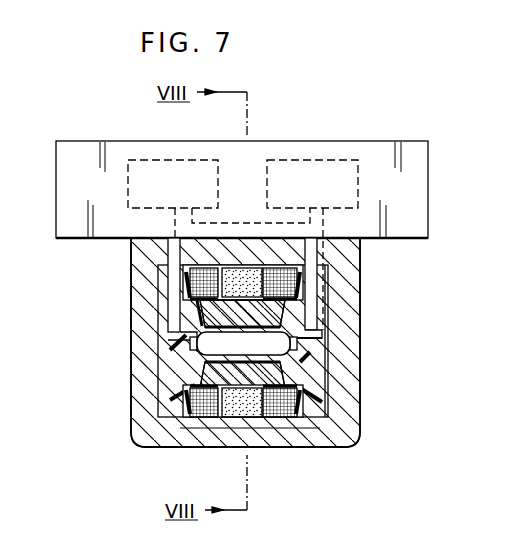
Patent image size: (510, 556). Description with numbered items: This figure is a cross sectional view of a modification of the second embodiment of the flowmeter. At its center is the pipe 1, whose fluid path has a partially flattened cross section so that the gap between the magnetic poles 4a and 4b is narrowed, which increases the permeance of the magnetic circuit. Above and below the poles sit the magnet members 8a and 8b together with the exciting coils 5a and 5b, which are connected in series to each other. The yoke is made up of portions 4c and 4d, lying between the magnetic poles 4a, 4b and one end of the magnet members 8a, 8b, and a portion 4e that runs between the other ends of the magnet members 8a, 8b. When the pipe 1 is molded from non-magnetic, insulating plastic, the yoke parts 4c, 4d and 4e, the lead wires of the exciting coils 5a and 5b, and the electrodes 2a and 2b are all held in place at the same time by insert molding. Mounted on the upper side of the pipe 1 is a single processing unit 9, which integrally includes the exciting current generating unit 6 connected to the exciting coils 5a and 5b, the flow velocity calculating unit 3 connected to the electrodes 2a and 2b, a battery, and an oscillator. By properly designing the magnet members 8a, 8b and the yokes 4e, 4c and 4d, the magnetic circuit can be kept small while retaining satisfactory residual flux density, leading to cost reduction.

The pipe 1 is at (257, 316).
The electrode 2a is at (288, 316).
The electrode 2b is at (300, 346).
The flow velocity calculating unit 3 is at (128, 190).
The magnetic pole 4a is at (197, 338).
The magnetic pole 4b is at (202, 366).
The yoke portion 4c is at (200, 306).
The yoke portion 4d is at (200, 384).
The yoke portion 4e is at (168, 250).
The exciting coil 5a is at (300, 284).
The exciting coil 5b is at (295, 418).
The exciting current generating unit 6 is at (358, 187).
The magnet member 8a is at (192, 281).
The magnet member 8b is at (230, 418).
The processing unit 9 is at (428, 205).